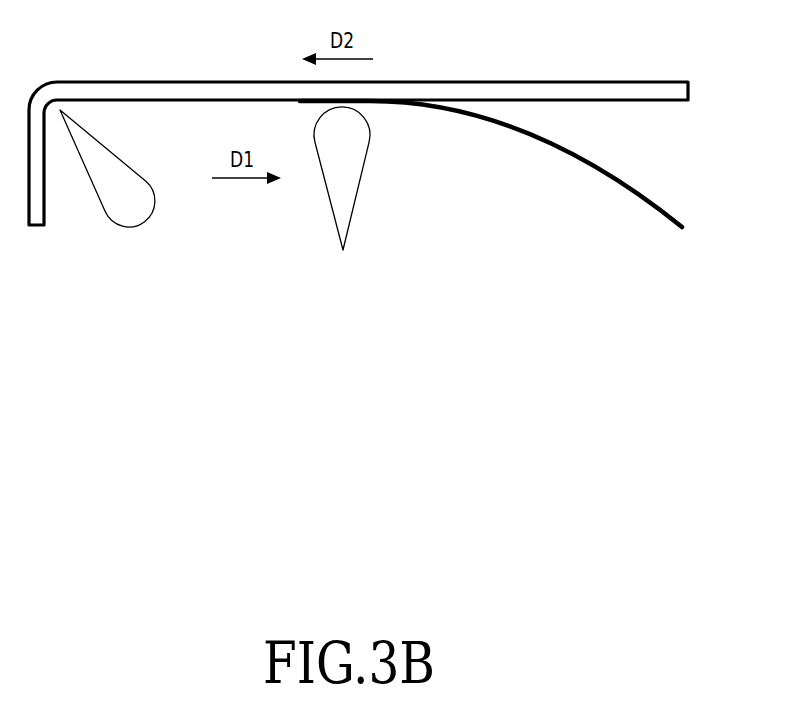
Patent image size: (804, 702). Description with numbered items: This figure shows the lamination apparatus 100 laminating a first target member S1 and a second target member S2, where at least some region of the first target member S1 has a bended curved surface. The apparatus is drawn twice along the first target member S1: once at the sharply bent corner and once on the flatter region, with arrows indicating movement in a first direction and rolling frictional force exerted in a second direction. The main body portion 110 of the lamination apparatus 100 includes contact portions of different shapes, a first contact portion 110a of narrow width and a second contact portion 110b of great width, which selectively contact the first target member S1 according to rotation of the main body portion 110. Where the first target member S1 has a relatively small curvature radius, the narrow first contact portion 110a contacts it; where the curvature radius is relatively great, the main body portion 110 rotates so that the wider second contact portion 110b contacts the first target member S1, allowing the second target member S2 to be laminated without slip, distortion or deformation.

The lamination apparatus 100 is at (244, 163).
The main body portion 110 is at (250, 163).
The first contact portion 110a is at (57, 108).
The second contact portion 110b is at (353, 108).
The first target member S1 is at (663, 92).
The second target member S2 is at (675, 231).